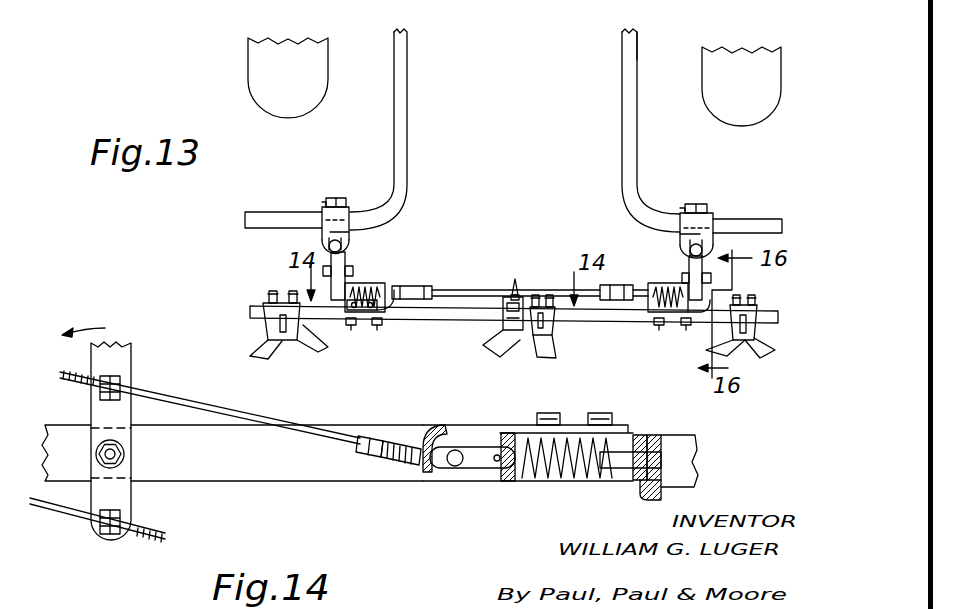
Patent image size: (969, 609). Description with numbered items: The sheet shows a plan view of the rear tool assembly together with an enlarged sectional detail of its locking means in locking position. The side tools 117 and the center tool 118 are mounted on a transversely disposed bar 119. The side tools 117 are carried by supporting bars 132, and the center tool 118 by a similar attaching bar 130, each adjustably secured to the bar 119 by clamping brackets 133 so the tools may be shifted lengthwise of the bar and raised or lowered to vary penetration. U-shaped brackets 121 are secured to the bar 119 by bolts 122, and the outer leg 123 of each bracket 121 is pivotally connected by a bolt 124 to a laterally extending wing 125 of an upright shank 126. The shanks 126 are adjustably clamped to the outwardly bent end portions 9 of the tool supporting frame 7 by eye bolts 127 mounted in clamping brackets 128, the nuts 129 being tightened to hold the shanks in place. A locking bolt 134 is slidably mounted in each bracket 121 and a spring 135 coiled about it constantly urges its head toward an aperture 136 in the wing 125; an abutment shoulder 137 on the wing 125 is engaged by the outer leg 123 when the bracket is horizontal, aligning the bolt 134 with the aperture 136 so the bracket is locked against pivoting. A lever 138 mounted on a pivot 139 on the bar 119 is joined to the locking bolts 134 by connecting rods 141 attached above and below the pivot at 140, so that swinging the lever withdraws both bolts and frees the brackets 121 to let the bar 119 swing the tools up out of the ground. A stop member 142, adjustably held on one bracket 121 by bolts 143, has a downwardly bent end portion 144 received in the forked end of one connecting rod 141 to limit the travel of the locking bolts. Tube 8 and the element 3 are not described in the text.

In FIG. 13, the furrow opener 3 is at (252, 67).
In FIG. 13, the tool supporting frame 7 is at (642, 44).
In FIG. 13, the standard tube 8 is at (402, 60).
In FIG. 13, the outwardly bent end portions 9 is at (258, 214).
In FIG. 13, the side tools 117 is at (262, 350).
In FIG. 13, the center tool 118 is at (484, 343).
In FIG. 13, the transversely disposed bar 119 is at (427, 324).
In FIG. 14, the transversely disposed bar 119 is at (268, 485).
In FIG. 13, the U-shaped brackets 121 is at (373, 284).
In FIG. 14, the U-shaped brackets 121 is at (508, 484).
In FIG. 13, the bolts 122 is at (352, 329).
In FIG. 13, the outer leg 123 is at (347, 266).
In FIG. 14, the outer leg 123 is at (643, 434).
In FIG. 13, the bolt 124 is at (709, 283).
In FIG. 13, the laterally extending wing 125 is at (342, 252).
In FIG. 14, the laterally extending wing 125 is at (656, 434).
In FIG. 13, the upright shank 126 is at (352, 240).
In FIG. 13, the eye bolts 127 is at (337, 198).
In FIG. 13, the clamping brackets 128 is at (347, 215).
In FIG. 13, the nuts 129 is at (324, 201).
In FIG. 13, the attaching bar 130 is at (545, 330).
In FIG. 13, the supporting bars 132 is at (281, 320).
In FIG. 13, the clamping brackets 133 is at (273, 303).
In FIG. 13, the locking bolts 134 is at (332, 302).
In FIG. 14, the locking bolts 134 is at (624, 468).
In FIG. 13, the spring 135 is at (356, 288).
In FIG. 14, the spring 135 is at (547, 484).
In FIG. 14, the aperture 136 is at (663, 460).
In FIG. 14, the abutment shoulder 137 is at (642, 496).
In FIG. 13, the lever 138 is at (519, 298).
In FIG. 14, the lever 138 is at (121, 345).
In FIG. 14, the pivot 139 is at (125, 454).
In FIG. 14, the connections of connecting rods to lever 140 is at (120, 378).
In FIG. 13, the connecting rods 141 is at (467, 290).
In FIG. 14, the connecting rods 141 is at (241, 414).
In FIG. 13, the stop member 142 is at (396, 310).
In FIG. 14, the stop member 142 is at (441, 424).
In FIG. 14, the bolts 143 is at (600, 412).
In FIG. 14, the downwardly bent end portion 144 is at (424, 474).